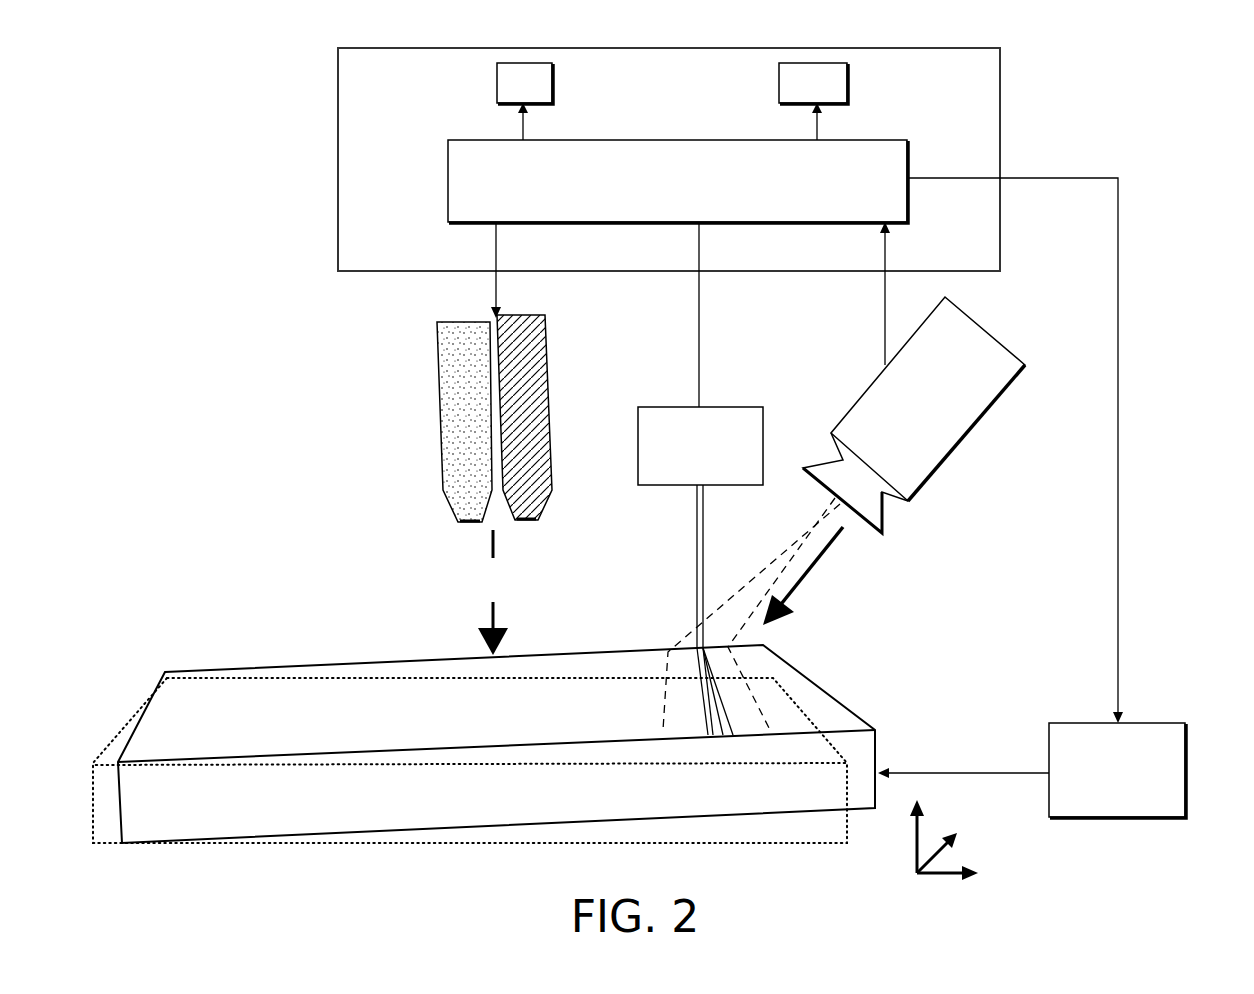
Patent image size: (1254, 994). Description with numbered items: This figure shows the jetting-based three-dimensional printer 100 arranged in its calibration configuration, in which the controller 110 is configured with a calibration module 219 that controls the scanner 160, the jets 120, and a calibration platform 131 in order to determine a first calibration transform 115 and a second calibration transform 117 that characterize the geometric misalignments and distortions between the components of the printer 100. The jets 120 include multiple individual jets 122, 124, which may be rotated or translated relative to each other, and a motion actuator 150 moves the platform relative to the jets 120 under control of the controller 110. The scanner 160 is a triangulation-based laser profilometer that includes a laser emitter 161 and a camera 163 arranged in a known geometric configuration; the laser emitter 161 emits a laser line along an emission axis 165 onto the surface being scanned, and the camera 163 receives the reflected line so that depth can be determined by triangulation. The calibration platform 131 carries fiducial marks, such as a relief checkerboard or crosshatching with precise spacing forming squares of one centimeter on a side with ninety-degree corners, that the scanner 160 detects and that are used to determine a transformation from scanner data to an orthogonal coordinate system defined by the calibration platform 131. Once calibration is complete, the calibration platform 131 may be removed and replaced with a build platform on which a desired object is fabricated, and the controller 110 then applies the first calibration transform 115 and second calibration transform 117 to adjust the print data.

The jetting-based 3D printer 100 is at (1090, 112).
The controller 110 is at (683, 112).
The first calibration transform 115 is at (497, 84).
The second calibration transform 117 is at (847, 84).
The calibration module 219 is at (695, 206).
The jets 120 is at (322, 396).
The jet 122 is at (437, 352).
The jet 124 is at (547, 352).
The laser emitter 161 is at (718, 470).
The scanner 160 is at (1000, 432).
The camera 163 is at (928, 455).
The emission axis 165 is at (725, 724).
The calibration platform 131 is at (428, 815).
The motion actuator 150 is at (1135, 795).